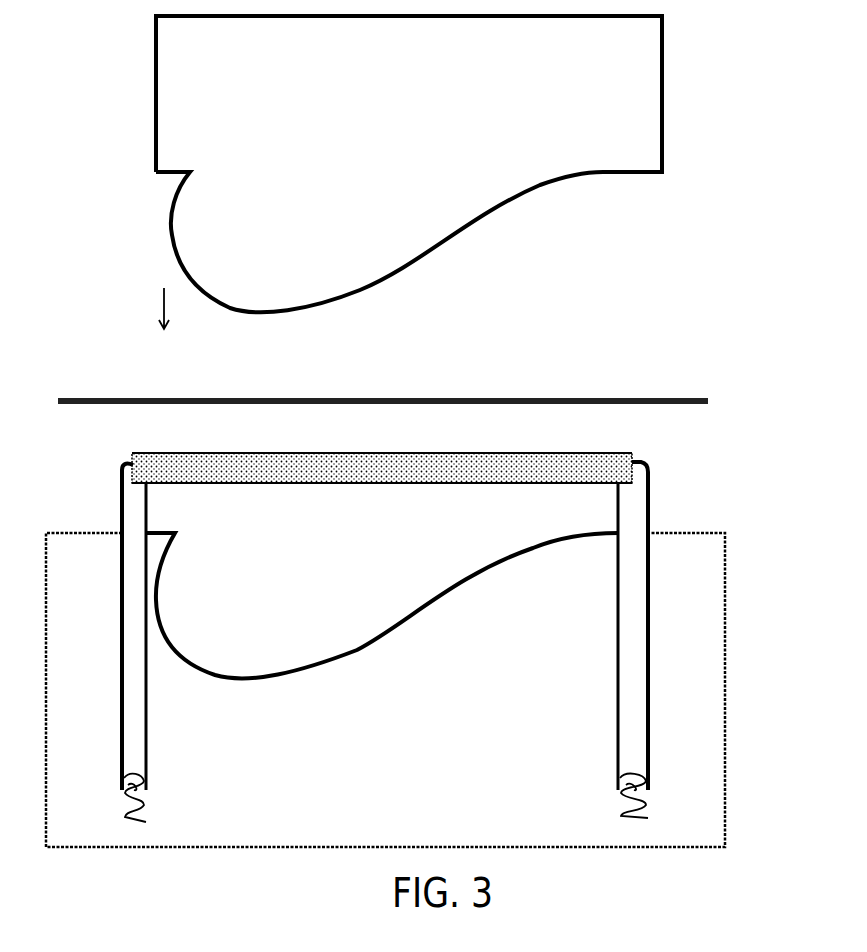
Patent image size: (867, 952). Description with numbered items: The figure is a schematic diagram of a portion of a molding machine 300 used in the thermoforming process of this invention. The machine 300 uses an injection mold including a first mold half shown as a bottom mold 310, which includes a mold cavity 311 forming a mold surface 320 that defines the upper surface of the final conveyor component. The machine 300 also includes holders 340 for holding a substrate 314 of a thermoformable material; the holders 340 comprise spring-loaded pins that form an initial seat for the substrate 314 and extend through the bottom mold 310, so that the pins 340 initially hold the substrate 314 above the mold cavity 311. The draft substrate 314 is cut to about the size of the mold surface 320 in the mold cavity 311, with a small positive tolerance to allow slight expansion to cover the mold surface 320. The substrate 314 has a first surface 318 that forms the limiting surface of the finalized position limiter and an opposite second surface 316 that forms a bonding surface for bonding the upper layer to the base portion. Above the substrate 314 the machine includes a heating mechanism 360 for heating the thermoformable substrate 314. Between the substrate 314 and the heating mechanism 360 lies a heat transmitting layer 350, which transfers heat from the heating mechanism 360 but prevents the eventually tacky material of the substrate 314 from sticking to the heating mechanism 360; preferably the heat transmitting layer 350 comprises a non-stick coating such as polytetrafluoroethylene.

The molding machine 300 is at (735, 308).
The bottom mold 310 is at (555, 798).
The mold cavity 311 is at (265, 594).
The substrate 314 is at (608, 470).
The second surface 316 is at (413, 452).
The first surface 318 is at (457, 483).
The mold surface 320 is at (360, 650).
The holders 340 is at (118, 507).
The heat transmitting layer 350 is at (710, 393).
The heating mechanism 360 is at (650, 112).